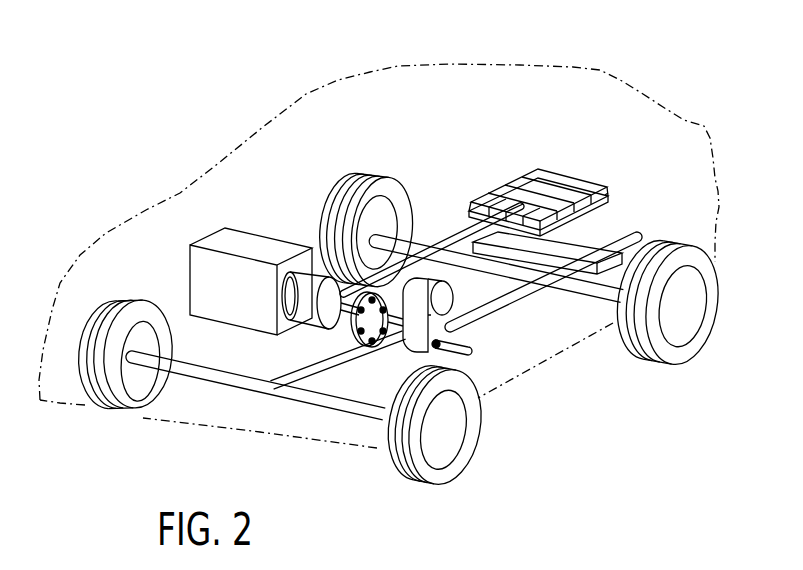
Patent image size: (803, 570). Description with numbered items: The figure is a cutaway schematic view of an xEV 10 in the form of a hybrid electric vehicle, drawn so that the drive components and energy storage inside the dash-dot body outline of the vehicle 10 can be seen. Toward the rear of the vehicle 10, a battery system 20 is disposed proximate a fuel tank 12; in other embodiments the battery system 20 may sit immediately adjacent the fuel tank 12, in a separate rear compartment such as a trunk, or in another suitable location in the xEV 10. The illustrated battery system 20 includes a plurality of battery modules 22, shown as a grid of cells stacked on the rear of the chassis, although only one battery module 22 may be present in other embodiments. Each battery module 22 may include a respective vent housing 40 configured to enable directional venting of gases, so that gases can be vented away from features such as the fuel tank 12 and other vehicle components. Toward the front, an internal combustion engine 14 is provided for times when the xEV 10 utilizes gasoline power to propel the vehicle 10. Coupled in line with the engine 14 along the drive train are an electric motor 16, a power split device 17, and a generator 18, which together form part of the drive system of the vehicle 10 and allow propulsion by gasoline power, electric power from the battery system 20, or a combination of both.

The xEV 10 is at (592, 61).
The fuel tank 12 is at (630, 237).
The internal combustion engine 14 is at (223, 240).
The electric motor 16 is at (310, 283).
The power split device 17 is at (353, 330).
The generator 18 is at (455, 336).
The battery system 20 is at (550, 182).
The battery module 22 is at (580, 182).
The vent housing 40 is at (605, 195).